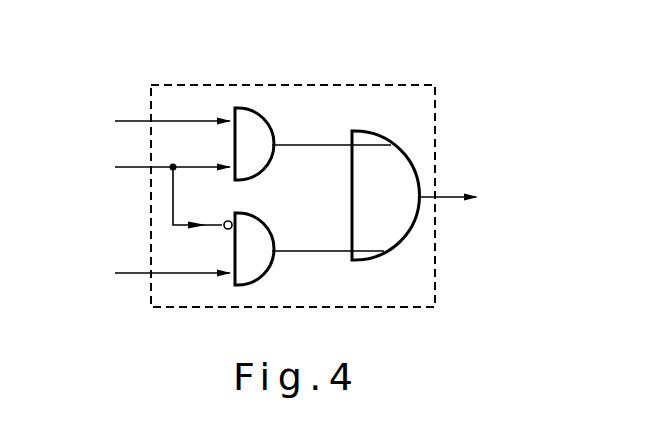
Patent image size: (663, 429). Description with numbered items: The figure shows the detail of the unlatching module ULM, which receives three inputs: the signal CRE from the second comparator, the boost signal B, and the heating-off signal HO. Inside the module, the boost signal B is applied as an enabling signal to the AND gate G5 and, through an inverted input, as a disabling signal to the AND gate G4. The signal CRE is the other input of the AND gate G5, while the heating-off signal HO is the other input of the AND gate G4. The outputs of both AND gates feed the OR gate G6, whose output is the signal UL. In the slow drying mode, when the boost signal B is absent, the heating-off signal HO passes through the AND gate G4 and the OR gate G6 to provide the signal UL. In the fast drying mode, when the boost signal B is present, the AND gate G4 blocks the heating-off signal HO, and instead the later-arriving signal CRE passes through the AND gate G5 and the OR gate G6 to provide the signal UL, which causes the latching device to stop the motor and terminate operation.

The unlatching module ULM is at (340, 85).
The signal CRE is at (142, 121).
The boost signal B is at (160, 191).
The heating-off signal HO is at (149, 274).
The AND gate G5 is at (313, 141).
The AND gate G4 is at (304, 255).
The OR gate G6 is at (365, 195).
The signal UL is at (466, 197).